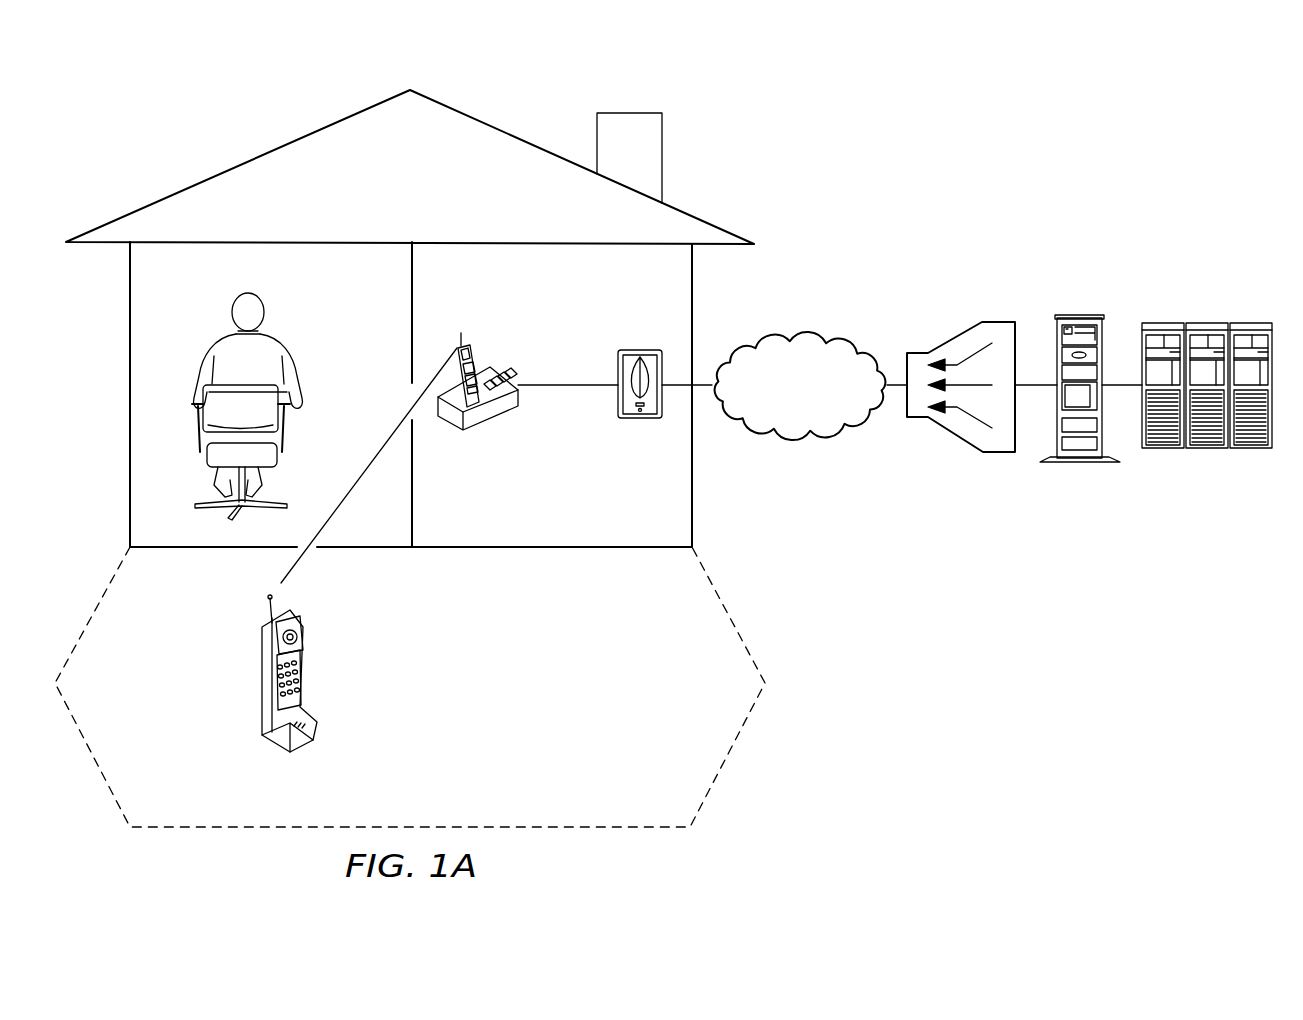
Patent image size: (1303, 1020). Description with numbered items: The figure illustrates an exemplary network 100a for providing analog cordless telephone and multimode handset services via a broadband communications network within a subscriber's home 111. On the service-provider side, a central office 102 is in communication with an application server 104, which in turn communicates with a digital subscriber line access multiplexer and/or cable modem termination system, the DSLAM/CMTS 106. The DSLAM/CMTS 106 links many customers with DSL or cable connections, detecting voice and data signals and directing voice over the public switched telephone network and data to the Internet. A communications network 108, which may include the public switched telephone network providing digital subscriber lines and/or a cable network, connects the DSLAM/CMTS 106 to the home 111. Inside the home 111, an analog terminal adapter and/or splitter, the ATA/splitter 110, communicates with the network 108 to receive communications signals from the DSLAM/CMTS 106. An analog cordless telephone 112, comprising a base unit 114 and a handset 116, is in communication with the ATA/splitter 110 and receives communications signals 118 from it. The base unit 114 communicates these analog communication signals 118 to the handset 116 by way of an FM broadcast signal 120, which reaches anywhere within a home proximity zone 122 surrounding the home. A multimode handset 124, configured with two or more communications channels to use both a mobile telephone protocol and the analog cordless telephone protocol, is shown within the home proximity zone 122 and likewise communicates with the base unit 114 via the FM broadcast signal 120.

The network 100a is at (910, 175).
The home 111 is at (226, 171).
The analog cordless telephone 112 is at (517, 421).
The base unit 114 is at (500, 367).
The handset 116 is at (472, 347).
The communications signals 118 is at (565, 386).
The analog terminal adapter (ATA) and/or splitter 110 is at (642, 350).
The communications network 108 is at (804, 335).
The DSLAM/CMTS 106 is at (1000, 322).
The application server 104 is at (1078, 315).
The central office 102 is at (1207, 323).
The FM broadcast signal 120 is at (293, 568).
The home proximity zone 122 is at (543, 675).
The multimode handset 124 is at (262, 680).